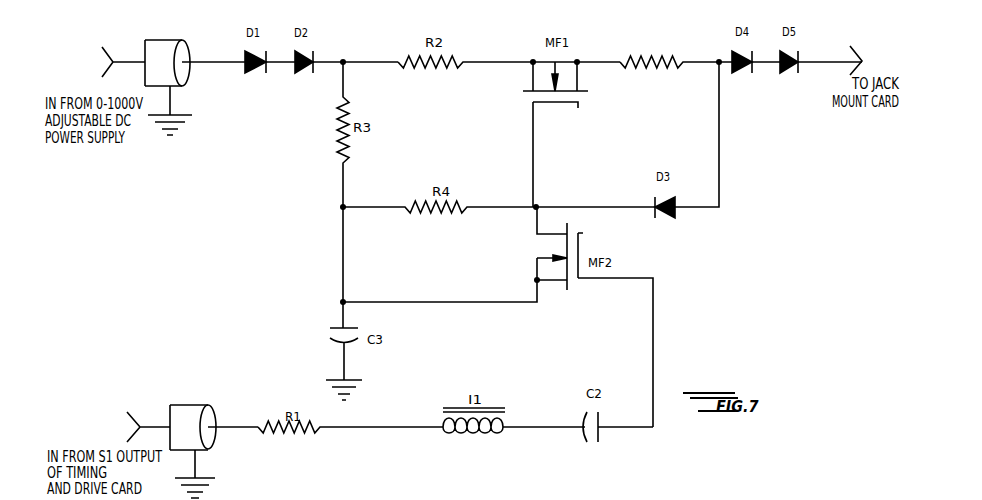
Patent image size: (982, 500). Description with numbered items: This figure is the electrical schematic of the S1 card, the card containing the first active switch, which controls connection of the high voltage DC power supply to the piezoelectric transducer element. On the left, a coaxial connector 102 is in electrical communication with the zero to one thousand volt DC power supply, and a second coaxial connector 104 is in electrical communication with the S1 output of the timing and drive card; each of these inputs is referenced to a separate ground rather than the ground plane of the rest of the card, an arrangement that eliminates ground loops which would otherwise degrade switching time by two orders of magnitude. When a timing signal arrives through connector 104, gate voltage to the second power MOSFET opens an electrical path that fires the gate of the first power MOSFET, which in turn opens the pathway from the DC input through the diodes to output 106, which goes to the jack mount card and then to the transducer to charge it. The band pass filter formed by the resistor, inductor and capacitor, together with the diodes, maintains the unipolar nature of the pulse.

The coaxial connector 102 is at (184, 42).
The coaxial connector 104 is at (206, 405).
The output 106 is at (863, 48).